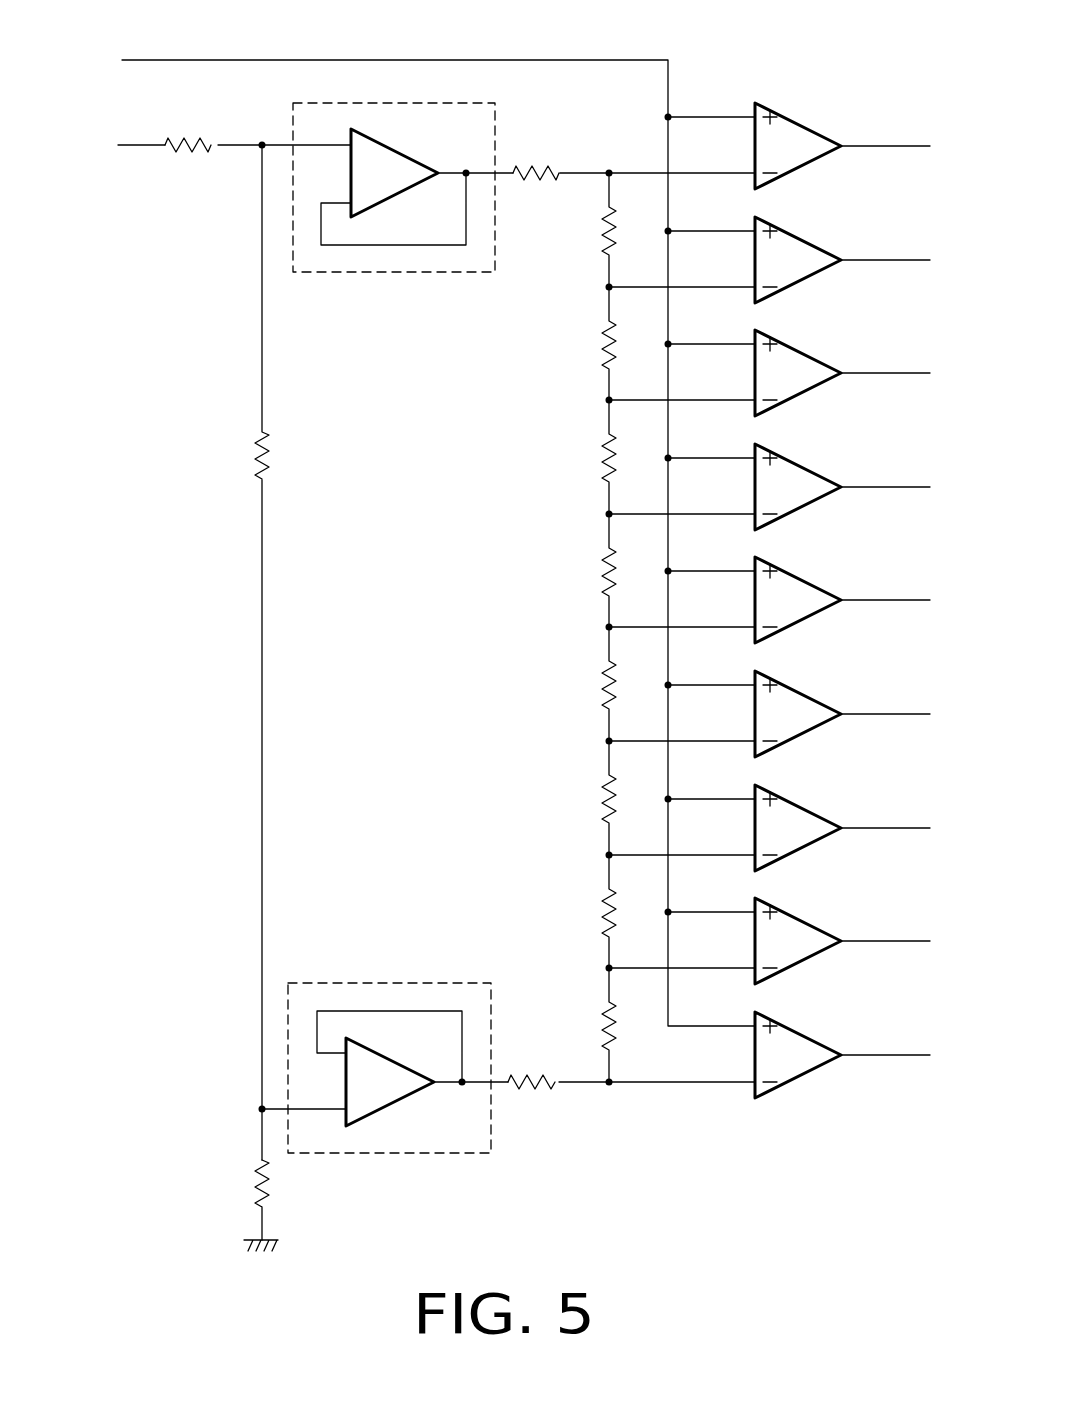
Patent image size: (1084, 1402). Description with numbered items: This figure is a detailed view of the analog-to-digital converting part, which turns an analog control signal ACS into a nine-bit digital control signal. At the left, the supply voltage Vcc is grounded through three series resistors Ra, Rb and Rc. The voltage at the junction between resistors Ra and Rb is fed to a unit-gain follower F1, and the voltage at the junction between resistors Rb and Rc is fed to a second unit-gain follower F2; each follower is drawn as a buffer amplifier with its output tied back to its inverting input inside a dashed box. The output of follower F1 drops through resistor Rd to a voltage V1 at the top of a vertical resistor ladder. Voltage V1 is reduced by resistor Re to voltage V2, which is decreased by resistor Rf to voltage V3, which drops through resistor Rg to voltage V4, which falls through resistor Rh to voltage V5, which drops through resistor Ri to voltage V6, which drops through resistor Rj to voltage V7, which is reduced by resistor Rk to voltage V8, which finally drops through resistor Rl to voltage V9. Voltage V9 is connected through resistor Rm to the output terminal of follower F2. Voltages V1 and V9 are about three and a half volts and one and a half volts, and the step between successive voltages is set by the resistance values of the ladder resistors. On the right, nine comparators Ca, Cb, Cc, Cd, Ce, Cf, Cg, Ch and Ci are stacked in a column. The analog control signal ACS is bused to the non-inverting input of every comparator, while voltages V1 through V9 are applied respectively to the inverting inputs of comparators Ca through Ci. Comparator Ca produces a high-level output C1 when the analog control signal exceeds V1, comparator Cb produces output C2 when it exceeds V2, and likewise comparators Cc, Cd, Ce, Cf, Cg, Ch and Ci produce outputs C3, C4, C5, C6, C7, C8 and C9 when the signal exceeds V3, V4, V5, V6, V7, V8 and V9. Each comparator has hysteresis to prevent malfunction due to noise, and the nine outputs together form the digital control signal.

The analog control signal line ACS is at (429, 513).
The supply voltage Vcc is at (117, 146).
The resistor Ra is at (258, 127).
The resistor Rb is at (278, 652).
The resistor Rc is at (272, 1179).
The resistor Rd is at (634, 158).
The resistor Re is at (627, 230).
The resistor Rf is at (625, 343).
The resistor Rg is at (627, 457).
The resistor Rh is at (627, 570).
The resistor Ri is at (624, 684).
The resistor Rj is at (624, 798).
The resistor Rk is at (627, 911).
The resistor Rl is at (623, 1025).
The resistor Rm is at (631, 1067).
The unit-gain follower F1 is at (395, 272).
The unit-gain follower F2 is at (390, 1153).
The voltage V1 is at (612, 157).
The voltage V2 is at (663, 288).
The voltage V3 is at (663, 401).
The voltage V4 is at (663, 515).
The voltage V5 is at (663, 628).
The voltage V6 is at (663, 742).
The voltage V7 is at (663, 856).
The voltage V8 is at (663, 969).
The voltage V9 is at (590, 1069).
The comparator Ca is at (798, 123).
The comparator Cb is at (798, 237).
The comparator Cc is at (798, 350).
The comparator Cd is at (798, 464).
The comparator Ce is at (798, 577).
The comparator Cf is at (798, 691).
The comparator Cg is at (798, 805).
The comparator Ch is at (798, 918).
The comparator Ci is at (798, 1032).
The output C1 is at (903, 147).
The output C2 is at (903, 261).
The output C3 is at (903, 374).
The output C4 is at (903, 488).
The output C5 is at (903, 601).
The output C6 is at (903, 715).
The output C7 is at (903, 829).
The output C8 is at (903, 942).
The output C9 is at (903, 1056).